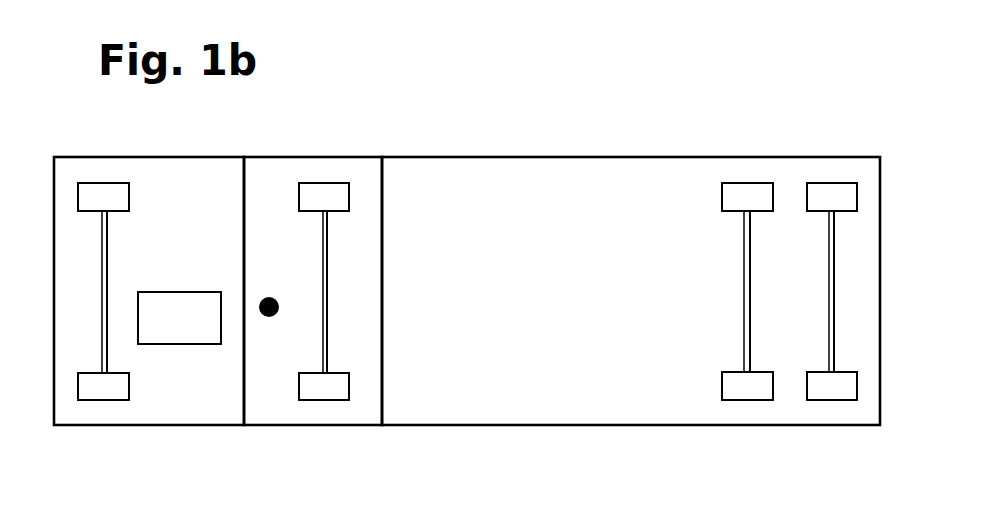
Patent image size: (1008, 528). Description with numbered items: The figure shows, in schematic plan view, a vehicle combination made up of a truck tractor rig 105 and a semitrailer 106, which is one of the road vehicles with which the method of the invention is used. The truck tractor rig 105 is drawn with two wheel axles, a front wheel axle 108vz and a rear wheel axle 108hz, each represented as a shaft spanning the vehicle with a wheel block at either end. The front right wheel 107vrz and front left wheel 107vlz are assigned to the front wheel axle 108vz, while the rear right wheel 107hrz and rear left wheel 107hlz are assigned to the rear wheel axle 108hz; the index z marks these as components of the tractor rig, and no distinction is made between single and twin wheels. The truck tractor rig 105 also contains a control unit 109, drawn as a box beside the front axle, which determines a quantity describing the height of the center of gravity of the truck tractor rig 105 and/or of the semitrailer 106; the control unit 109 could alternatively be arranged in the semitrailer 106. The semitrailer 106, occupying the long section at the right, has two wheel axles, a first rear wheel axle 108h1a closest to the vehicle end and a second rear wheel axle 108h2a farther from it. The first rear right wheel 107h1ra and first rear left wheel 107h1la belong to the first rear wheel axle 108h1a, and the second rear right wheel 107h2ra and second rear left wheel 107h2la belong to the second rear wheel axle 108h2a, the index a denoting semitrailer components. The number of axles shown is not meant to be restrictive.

The truck tractor rig 105 is at (185, 177).
The semitrailer 106 is at (510, 178).
The front right wheel of truck tractor rig 107vrz is at (102, 192).
The front left wheel of truck tractor rig 107vlz is at (103, 393).
The rear right wheel of truck tractor rig 107hrz is at (323, 190).
The rear left wheel of truck tractor rig 107hlz is at (323, 393).
The second rear right wheel of semitrailer 107h2ra is at (750, 190).
The first rear right wheel of semitrailer 107h1ra is at (818, 190).
The second rear left wheel of semitrailer 107h2la is at (750, 393).
The first rear left wheel of semitrailer 107h1la is at (820, 393).
The front wheel axle of truck tractor rig 108vz is at (133, 269).
The rear wheel axle of truck tractor rig 108hz is at (323, 273).
The second rear wheel axle of semitrailer 108h2a is at (744, 273).
The first rear wheel axle of semitrailer 108h1a is at (829, 273).
The control unit 109 is at (162, 338).